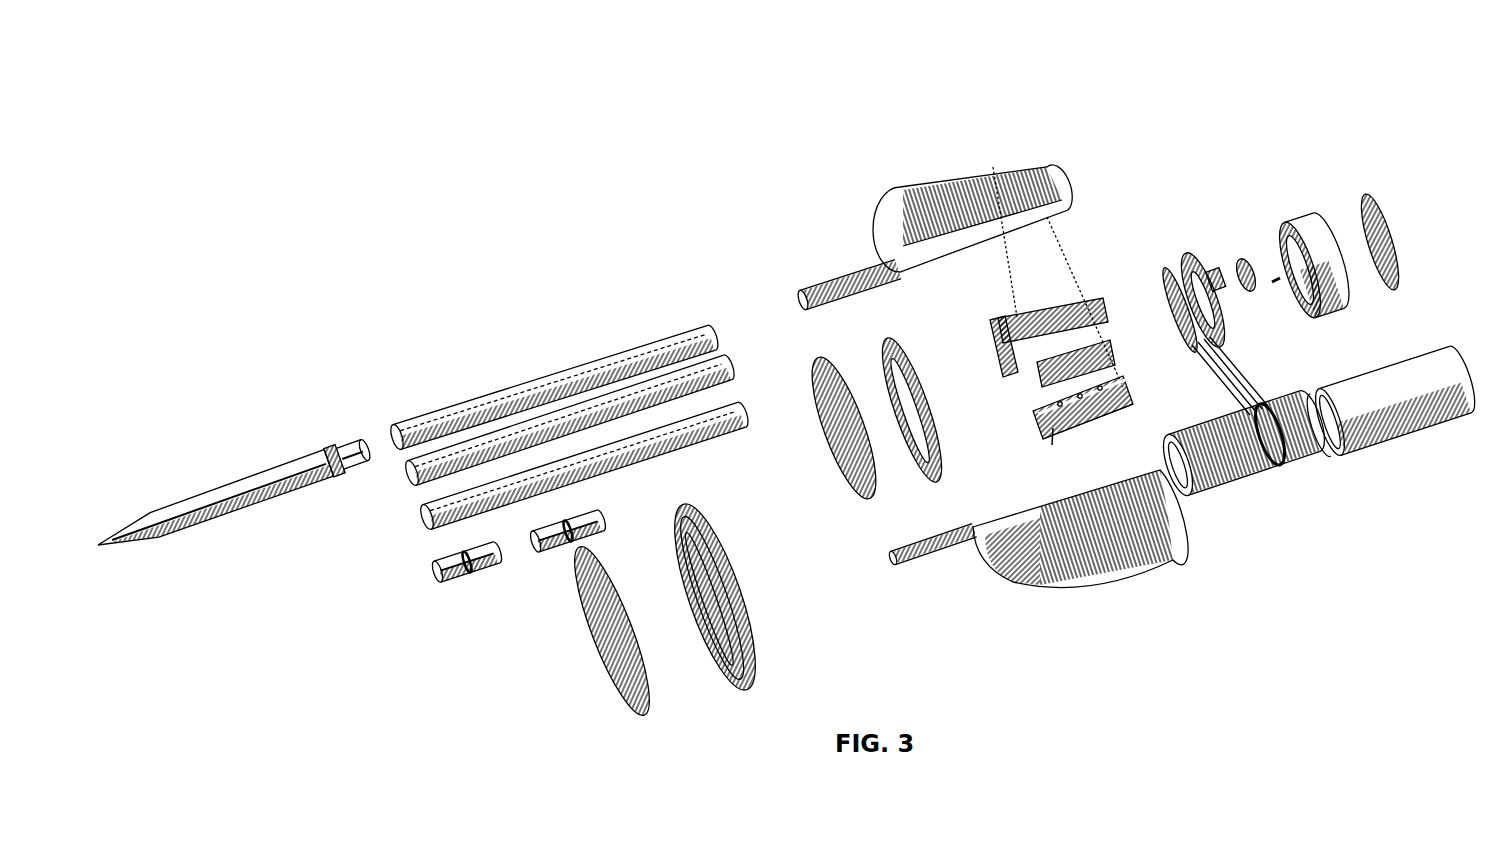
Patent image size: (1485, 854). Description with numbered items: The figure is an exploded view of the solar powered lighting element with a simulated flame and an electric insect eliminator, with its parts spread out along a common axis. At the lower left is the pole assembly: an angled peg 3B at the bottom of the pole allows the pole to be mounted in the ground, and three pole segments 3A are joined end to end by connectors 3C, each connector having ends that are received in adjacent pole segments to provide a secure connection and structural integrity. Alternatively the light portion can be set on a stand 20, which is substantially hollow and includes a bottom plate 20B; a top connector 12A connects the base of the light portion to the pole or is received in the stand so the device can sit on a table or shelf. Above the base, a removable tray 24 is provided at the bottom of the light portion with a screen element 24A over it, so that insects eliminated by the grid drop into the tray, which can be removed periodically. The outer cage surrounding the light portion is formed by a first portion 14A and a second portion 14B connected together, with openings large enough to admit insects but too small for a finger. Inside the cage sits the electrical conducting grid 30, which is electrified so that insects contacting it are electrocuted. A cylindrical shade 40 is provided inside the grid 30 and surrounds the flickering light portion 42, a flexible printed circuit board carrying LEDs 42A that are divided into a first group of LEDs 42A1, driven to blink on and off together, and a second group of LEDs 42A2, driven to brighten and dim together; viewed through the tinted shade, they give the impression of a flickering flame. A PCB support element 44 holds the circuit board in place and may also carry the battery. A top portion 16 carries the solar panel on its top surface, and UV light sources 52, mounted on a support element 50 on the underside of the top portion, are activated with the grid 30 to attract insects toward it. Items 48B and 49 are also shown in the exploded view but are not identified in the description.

The angled peg 3B is at (222, 482).
The connector 3C is at (447, 557).
The pole segment 3A is at (480, 443).
The bottom plate 20B is at (567, 523).
The stand 20 is at (677, 497).
The removable tray 24 is at (817, 357).
The screen element 24A is at (890, 337).
The connector 12A is at (863, 272).
The first portion 14A is at (955, 177).
The PCB support element 44 is at (982, 193).
The flickering light portion 42 is at (1080, 353).
The LEDs 42A is at (1112, 468).
The first group of LEDs 42A1 is at (1035, 410).
The second group of LEDs 42A2 is at (1064, 439).
The second portion 14B is at (1117, 548).
The inner cylinder 48B is at (1243, 292).
The UV light source 52 is at (1275, 452).
The support element 50 is at (1165, 272).
The spacer disc 49 is at (1187, 250).
The electrical conducting grid 30 is at (1240, 262).
The top portion 16 is at (1308, 217).
The shade 40 is at (1380, 372).